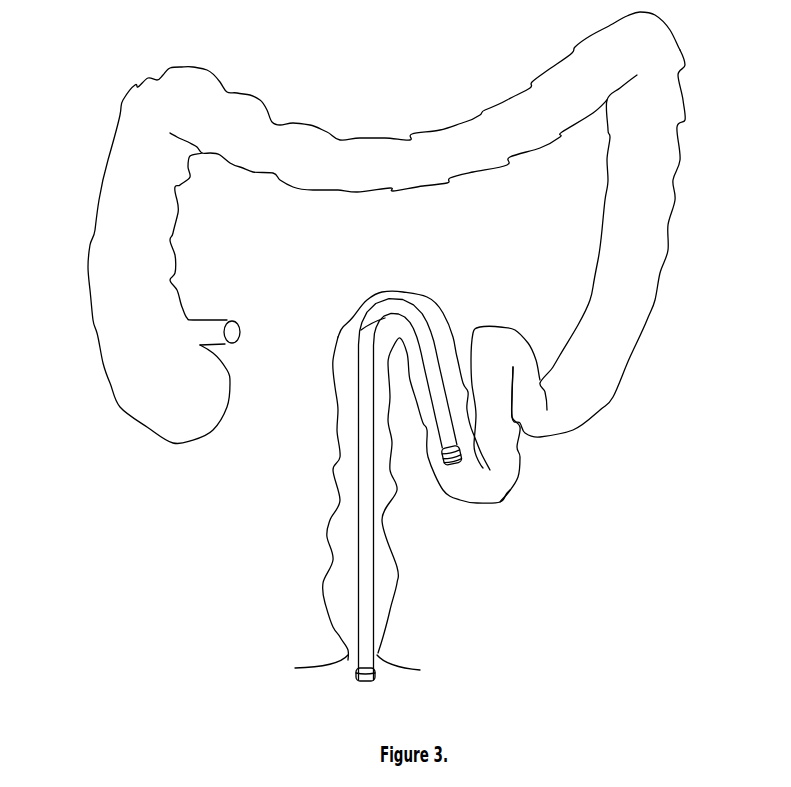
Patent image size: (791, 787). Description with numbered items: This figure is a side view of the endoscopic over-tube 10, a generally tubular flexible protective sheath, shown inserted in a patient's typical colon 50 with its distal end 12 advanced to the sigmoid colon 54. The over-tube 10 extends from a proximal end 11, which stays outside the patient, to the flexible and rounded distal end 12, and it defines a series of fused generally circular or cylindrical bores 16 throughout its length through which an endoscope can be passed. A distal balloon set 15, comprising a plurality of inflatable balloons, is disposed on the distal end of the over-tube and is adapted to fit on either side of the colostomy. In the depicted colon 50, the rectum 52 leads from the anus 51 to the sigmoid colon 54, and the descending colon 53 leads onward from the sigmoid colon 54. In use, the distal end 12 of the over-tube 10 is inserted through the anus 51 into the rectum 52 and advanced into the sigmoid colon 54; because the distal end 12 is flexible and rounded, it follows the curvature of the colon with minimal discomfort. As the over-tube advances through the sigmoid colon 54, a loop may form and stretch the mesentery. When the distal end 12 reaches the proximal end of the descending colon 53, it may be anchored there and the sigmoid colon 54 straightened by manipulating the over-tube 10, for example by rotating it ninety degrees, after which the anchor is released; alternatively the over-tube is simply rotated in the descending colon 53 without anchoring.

The endoscopic over-tube 10 is at (323, 492).
The proximal end 11 is at (314, 684).
The distal end 12 is at (438, 472).
The distal balloon set 15 is at (422, 460).
The bore 16 is at (330, 665).
The colon 50 is at (120, 454).
The anus 51 is at (374, 673).
The rectum 52 is at (318, 427).
The descending colon 53 is at (633, 270).
The sigmoid colon 54 is at (390, 288).